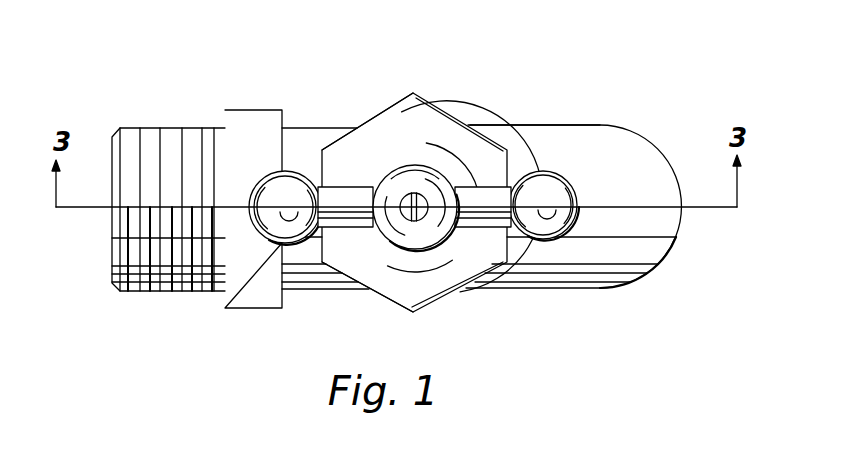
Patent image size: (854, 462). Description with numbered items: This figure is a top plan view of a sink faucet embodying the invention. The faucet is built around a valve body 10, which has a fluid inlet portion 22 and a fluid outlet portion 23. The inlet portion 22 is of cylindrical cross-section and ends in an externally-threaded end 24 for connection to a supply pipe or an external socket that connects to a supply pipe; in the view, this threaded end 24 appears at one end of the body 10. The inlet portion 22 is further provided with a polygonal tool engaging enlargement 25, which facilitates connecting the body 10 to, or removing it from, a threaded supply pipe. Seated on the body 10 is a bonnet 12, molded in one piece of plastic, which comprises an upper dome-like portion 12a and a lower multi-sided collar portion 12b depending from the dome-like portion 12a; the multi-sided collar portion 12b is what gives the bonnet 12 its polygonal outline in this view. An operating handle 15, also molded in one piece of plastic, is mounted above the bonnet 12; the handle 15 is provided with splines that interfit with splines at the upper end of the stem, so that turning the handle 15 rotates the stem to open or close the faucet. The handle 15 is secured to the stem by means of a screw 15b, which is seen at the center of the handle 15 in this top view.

The valve body 10 is at (553, 118).
The bonnet 12 is at (432, 199).
The upper dome-like portion 12a is at (397, 123).
The lower multi-sided collar portion 12b is at (392, 303).
The operating handle 15 is at (560, 170).
The screw 15b is at (425, 213).
The fluid inlet portion 22 is at (310, 127).
The fluid outlet portion 23 is at (510, 125).
The externally-threaded end 24 is at (150, 132).
The polygonal tool engaging enlargement 25 is at (262, 117).